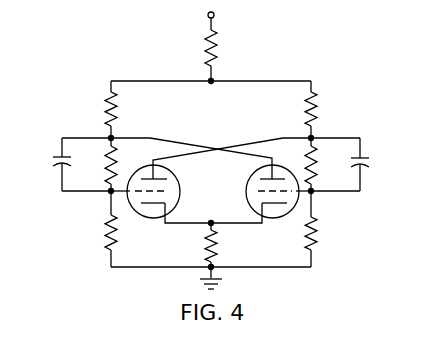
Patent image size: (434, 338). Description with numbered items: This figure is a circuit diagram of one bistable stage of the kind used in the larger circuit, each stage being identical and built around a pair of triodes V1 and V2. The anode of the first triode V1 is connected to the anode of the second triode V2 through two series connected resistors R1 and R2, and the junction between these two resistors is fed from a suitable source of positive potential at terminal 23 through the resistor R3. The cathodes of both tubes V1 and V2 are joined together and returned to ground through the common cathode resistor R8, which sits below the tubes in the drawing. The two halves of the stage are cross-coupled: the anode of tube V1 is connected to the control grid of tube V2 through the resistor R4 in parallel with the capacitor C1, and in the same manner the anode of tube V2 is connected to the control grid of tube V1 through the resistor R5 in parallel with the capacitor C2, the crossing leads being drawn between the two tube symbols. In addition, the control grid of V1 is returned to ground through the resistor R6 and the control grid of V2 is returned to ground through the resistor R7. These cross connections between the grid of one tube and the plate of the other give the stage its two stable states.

The terminal 23 is at (207, 16).
The resistor R3 is at (217, 44).
The resistor R2 is at (116, 98).
The resistor R1 is at (307, 112).
The capacitor C2 is at (58, 154).
The capacitor C1 is at (360, 166).
The resistor R5 is at (106, 160).
The resistor R4 is at (316, 164).
The resistor R6 is at (105, 233).
The resistor R7 is at (317, 233).
The common cathode resistor R8 is at (211, 234).
The triode V1 is at (156, 222).
The triode V2 is at (277, 222).